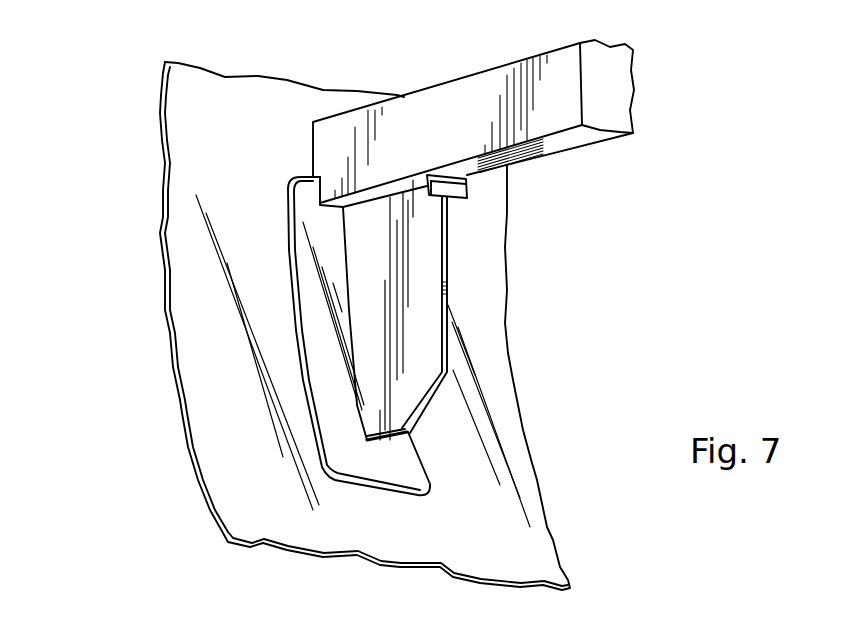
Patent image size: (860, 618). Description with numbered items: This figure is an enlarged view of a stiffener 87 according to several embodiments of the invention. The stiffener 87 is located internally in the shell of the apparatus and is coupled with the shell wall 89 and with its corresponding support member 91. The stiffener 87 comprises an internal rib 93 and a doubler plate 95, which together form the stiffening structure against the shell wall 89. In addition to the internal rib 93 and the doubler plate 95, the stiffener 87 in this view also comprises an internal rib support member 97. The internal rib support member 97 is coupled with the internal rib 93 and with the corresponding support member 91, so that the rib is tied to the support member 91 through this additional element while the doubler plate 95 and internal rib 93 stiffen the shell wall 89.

The stiffener 87 is at (370, 328).
The shell wall 89 is at (518, 555).
The support member 91 is at (574, 144).
The internal rib 93 is at (422, 355).
The doubler plate 95 is at (403, 470).
The internal rib support member 97 is at (466, 188).